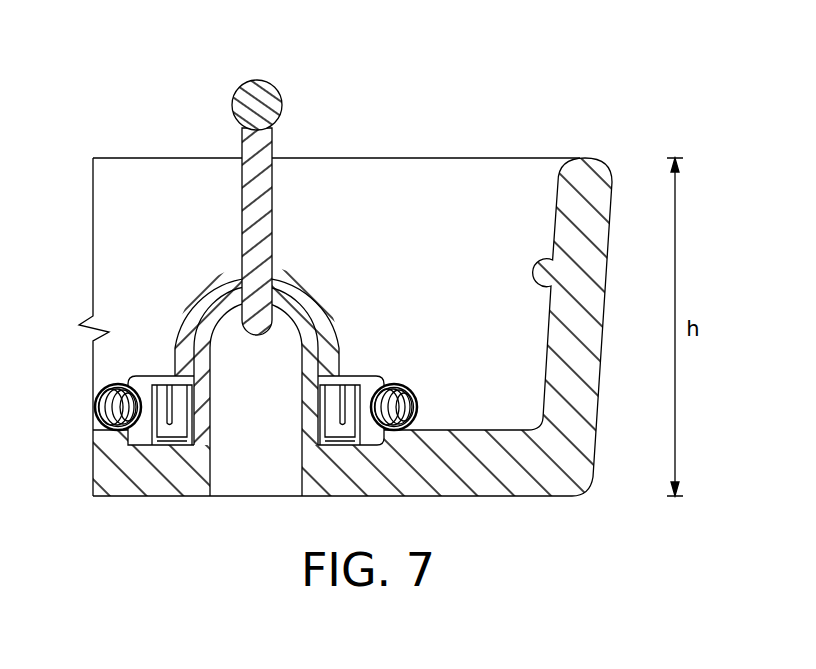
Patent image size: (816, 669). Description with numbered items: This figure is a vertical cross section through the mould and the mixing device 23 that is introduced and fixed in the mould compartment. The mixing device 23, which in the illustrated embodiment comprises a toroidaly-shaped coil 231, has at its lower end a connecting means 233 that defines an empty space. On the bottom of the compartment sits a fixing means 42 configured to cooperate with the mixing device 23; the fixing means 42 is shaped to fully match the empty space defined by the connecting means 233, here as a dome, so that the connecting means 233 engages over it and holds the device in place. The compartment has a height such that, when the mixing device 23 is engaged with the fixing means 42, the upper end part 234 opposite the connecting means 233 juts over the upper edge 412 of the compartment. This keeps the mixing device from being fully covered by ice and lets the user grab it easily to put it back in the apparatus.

The mixing device 23 is at (235, 141).
The upper end part 234 is at (259, 80).
The connecting means 233 is at (294, 286).
The toroidaly-shaped coil 231 is at (417, 407).
The fixing means 42 is at (243, 482).
The upper edge 412 is at (589, 158).